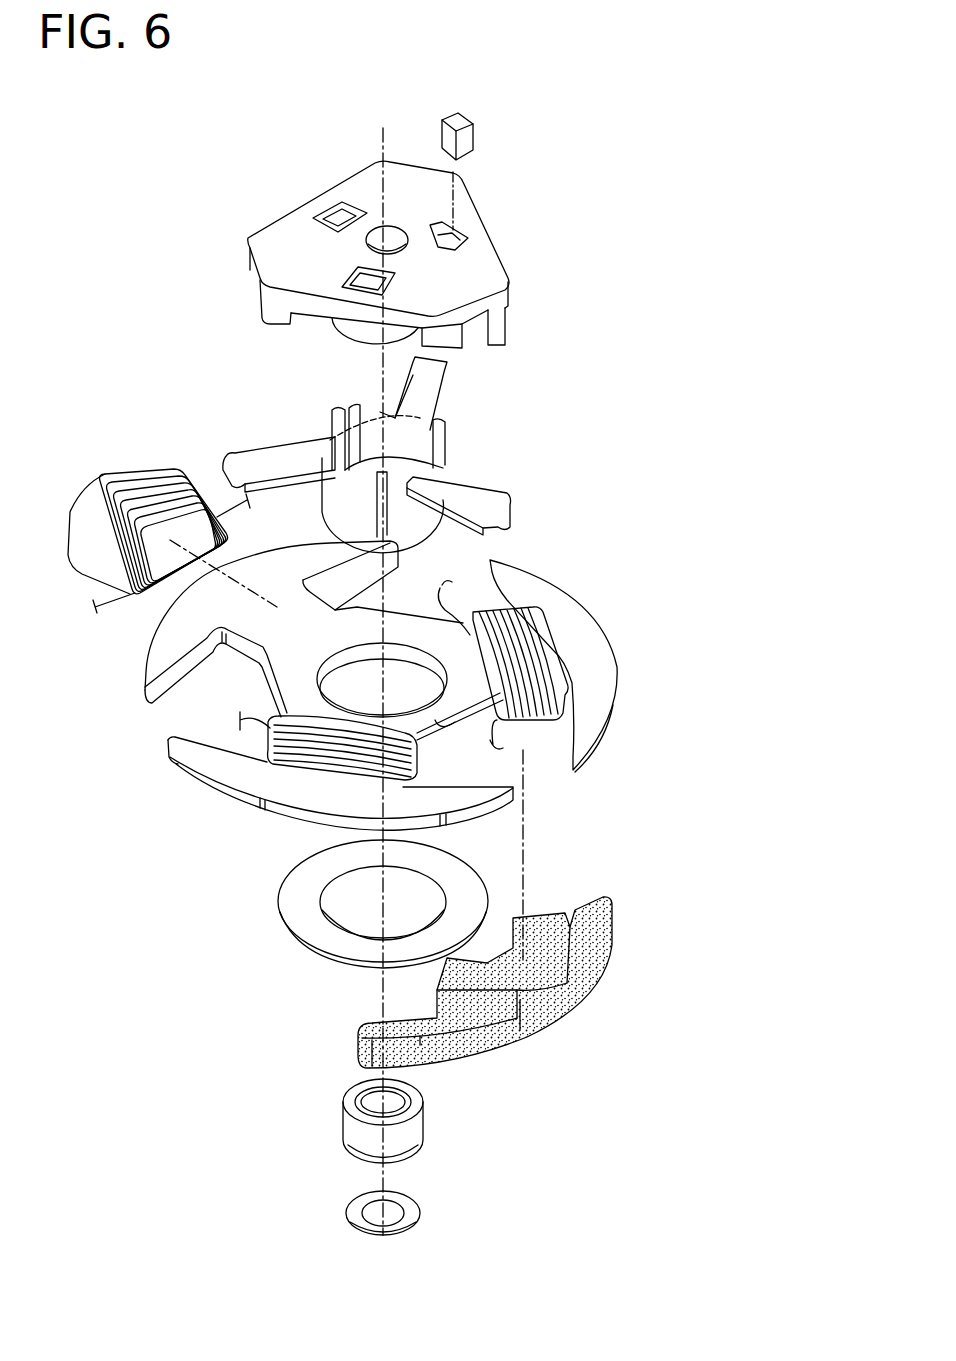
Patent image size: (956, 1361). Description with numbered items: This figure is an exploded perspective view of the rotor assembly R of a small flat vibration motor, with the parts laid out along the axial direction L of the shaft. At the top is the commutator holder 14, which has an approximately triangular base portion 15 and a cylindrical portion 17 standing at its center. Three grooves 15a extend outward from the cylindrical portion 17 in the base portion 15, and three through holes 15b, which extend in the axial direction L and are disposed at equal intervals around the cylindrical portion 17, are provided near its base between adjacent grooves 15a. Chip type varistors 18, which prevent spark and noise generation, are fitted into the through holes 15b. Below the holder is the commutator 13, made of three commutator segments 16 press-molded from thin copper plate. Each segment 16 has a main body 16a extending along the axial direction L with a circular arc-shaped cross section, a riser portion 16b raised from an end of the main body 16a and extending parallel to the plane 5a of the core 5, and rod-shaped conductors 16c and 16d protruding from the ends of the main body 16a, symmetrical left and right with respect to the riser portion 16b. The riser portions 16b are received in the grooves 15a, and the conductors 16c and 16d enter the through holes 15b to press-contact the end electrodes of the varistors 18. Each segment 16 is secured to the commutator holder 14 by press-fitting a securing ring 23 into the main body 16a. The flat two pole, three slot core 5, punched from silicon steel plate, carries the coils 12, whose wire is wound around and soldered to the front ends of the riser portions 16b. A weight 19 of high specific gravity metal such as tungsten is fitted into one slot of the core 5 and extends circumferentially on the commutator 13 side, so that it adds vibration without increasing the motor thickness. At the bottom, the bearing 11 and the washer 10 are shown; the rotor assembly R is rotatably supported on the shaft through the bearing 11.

The axial direction L is at (382, 142).
The rotor assembly R is at (155, 338).
The commutator holder 14 is at (385, 267).
The base portion 15 is at (385, 267).
The grooves 15a is at (256, 292).
The through holes 15b is at (447, 243).
The chip type varistor 18 is at (468, 123).
The cylindrical portion 17 is at (362, 328).
The commutator 13 is at (398, 466).
The commutator segment 16 is at (298, 458).
The main body 16a is at (418, 515).
The riser portion 16b is at (505, 495).
The rod-shaped conductor 16c is at (345, 522).
The rod-shaped conductor 16d is at (448, 437).
The coil 12 is at (135, 500).
The core 5 is at (411, 685).
The plane of the core 5a is at (610, 668).
The securing ring 23 is at (300, 910).
The weight 19 is at (565, 995).
The bearing 11 is at (348, 1120).
The washer 10 is at (418, 1210).